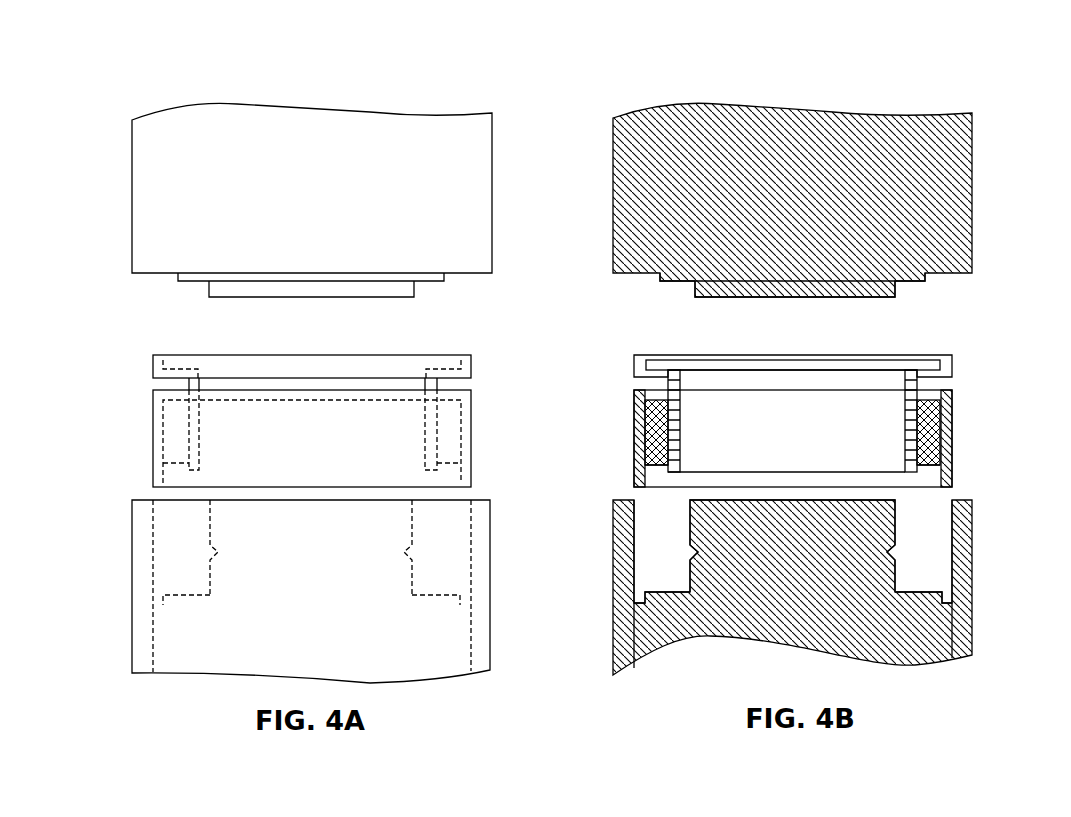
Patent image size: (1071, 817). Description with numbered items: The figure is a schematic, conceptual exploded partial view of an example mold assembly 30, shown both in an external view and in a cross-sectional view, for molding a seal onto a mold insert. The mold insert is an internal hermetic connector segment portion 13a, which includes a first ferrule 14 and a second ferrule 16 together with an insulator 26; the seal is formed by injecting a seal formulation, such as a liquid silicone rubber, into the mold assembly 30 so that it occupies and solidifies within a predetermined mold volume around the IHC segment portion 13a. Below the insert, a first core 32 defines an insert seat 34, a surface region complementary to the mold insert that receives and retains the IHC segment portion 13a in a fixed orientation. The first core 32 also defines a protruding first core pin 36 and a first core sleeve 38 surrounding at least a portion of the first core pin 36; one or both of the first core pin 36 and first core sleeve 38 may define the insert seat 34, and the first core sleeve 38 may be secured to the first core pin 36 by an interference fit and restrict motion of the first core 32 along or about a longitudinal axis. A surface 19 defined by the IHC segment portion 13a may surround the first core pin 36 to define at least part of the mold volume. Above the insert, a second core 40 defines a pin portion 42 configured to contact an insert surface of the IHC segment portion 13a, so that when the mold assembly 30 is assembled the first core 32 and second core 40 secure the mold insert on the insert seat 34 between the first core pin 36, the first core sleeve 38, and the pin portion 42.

In FIG. 4A, the mold assembly 30 is at (127, 76).
In FIG. 4A, the second core 40 is at (492, 172).
In FIG. 4B, the second core 40 is at (611, 170).
In FIG. 4A, the pin portion 42 is at (414, 297).
In FIG. 4B, the pin portion 42 is at (695, 297).
In FIG. 4A, the first ferrule 14 is at (462, 372).
In FIG. 4B, the first ferrule 14 is at (638, 372).
In FIG. 4A, the surface 19 is at (425, 410).
In FIG. 4B, the surface 19 is at (683, 388).
In FIG. 4A, the insulator 26 is at (454, 412).
In FIG. 4B, the insulator 26 is at (657, 412).
In FIG. 4A, the second ferrule 16 is at (462, 447).
In FIG. 4B, the second ferrule 16 is at (636, 447).
In FIG. 4A, the IHC segment portion 13a is at (361, 402).
In FIG. 4B, the IHC segment portion 13a is at (744, 401).
In FIG. 4A, the first core sleeve 38 is at (483, 515).
In FIG. 4B, the first core sleeve 38 is at (617, 515).
In FIG. 4A, the first core pin 36 is at (327, 522).
In FIG. 4B, the first core pin 36 is at (767, 517).
In FIG. 4A, the insert seat 34 is at (435, 592).
In FIG. 4B, the insert seat 34 is at (672, 592).
In FIG. 4A, the first core 32 is at (348, 586).
In FIG. 4B, the first core 32 is at (757, 586).